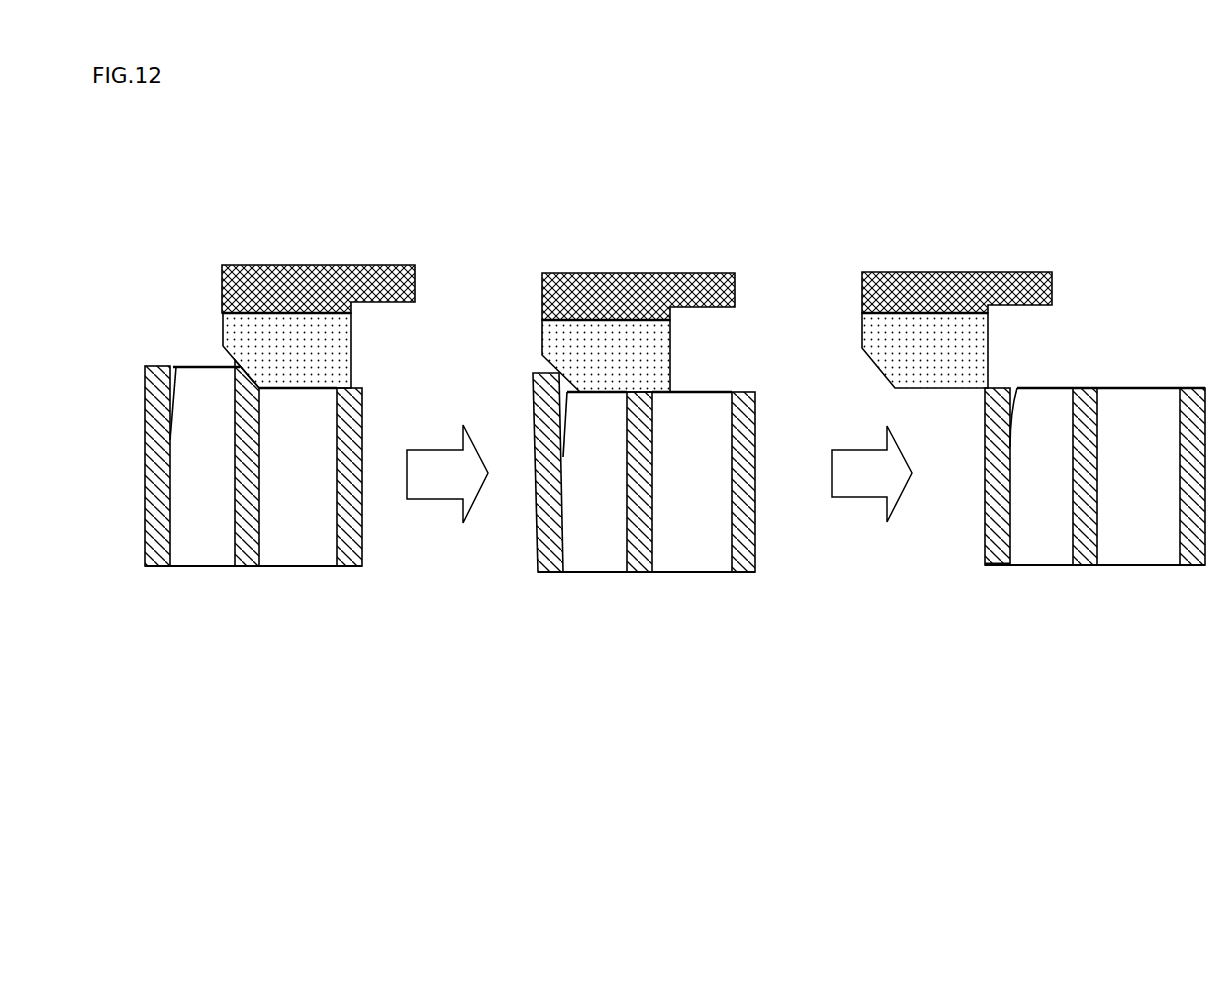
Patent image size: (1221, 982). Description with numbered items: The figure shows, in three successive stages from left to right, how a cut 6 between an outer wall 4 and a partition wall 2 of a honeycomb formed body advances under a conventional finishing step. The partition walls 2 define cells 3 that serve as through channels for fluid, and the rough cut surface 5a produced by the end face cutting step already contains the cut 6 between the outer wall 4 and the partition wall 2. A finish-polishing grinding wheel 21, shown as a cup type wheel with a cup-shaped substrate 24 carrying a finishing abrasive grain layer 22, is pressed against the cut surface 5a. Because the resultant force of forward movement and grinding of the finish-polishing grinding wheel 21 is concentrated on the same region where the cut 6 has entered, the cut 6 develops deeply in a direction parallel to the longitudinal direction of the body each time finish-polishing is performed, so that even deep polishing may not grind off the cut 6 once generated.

The partition wall 2 is at (350, 547).
The cell 3 is at (280, 550).
The outer wall 4 is at (163, 543).
The cut surface 5a is at (162, 367).
The cut 6 is at (173, 383).
The finish-polishing grinding wheel 21 is at (275, 265).
The finishing abrasive grain layer 22 is at (243, 325).
The cup-shaped substrate 24 is at (243, 295).